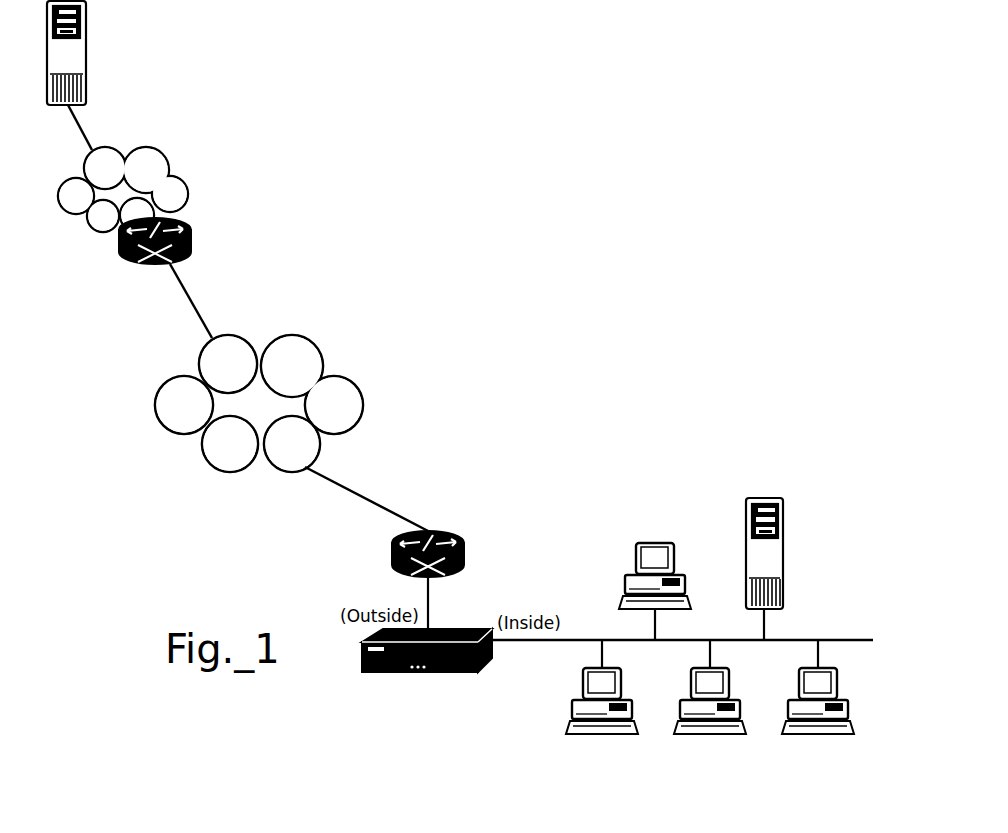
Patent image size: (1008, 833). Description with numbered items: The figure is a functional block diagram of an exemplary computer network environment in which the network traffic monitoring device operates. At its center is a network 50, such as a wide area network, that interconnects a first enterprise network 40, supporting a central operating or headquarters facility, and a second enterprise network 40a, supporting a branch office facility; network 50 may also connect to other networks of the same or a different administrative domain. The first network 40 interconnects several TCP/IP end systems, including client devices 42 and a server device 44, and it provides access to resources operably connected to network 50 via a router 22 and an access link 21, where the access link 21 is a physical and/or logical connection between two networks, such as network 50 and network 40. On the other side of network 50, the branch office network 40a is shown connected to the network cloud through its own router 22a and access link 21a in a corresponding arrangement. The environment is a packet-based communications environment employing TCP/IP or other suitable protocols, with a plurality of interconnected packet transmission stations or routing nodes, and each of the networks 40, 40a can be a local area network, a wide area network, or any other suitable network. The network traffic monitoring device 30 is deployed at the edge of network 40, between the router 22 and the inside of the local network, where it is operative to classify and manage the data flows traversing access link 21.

The second enterprise network 40a is at (190, 191).
The router 22a is at (192, 242).
The access link 21a is at (185, 297).
The network 50 is at (208, 468).
The access link 21 is at (349, 476).
The router 22 is at (466, 555).
The network traffic monitoring device 30 is at (460, 673).
The first enterprise network 40 is at (873, 640).
The client devices 42 is at (657, 543).
The server device 44 is at (775, 498).